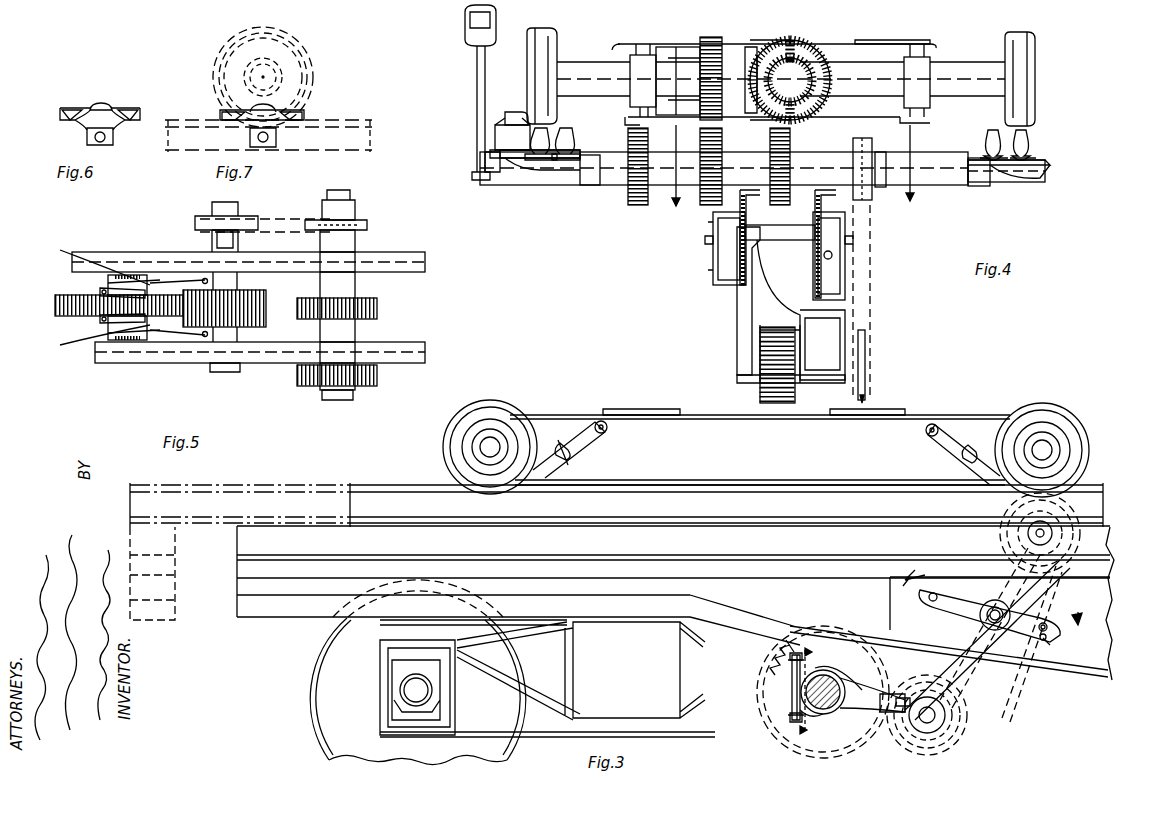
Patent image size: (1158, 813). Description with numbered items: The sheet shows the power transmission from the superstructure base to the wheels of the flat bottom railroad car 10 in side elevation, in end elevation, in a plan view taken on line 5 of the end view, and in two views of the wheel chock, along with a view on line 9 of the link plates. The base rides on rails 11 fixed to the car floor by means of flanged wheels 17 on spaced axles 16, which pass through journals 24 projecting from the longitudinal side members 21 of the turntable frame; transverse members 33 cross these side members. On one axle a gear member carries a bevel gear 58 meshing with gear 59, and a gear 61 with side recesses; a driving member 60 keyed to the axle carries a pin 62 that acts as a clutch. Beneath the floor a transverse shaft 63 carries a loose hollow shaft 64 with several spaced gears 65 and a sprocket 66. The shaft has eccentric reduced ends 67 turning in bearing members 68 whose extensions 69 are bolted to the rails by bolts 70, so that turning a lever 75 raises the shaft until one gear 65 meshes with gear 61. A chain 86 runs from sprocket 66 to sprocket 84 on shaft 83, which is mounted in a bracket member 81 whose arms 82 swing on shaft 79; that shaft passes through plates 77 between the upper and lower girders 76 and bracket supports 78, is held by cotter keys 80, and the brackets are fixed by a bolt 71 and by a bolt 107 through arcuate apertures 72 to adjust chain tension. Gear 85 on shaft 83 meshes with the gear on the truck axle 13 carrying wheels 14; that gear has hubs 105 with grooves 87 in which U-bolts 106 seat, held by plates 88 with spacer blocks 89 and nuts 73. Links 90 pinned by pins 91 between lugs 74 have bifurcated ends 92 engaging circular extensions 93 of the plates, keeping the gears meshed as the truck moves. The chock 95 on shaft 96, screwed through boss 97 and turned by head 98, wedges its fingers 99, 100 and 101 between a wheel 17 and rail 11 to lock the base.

In FIG. 4, the section line 5 is at (794, 175).
In FIG. 3, the section line 9 is at (813, 694).
In FIG. 3, the flat bottom railroad car 10 is at (673, 571).
In FIG. 7, the rails 11 is at (268, 136).
In FIG. 3, the rails 11 is at (616, 551).
In FIG. 5, the axles 13 is at (118, 275).
In FIG. 3, the axles 13 is at (400, 692).
In FIG. 3, the wheels 14 is at (335, 660).
In FIG. 4, the axles 16 is at (962, 72).
In FIG. 3, the axles 16 is at (480, 446).
In FIG. 4, the flanged wheels 17 is at (548, 42).
In FIG. 3, the flanged wheels 17 is at (450, 425).
In FIG. 4, the longitudinal side members 21 is at (948, 32).
In FIG. 3, the longitudinal side members 21 is at (760, 450).
In FIG. 4, the journals 24 is at (645, 58).
In FIG. 4, the parallel members 33 is at (885, 40).
In FIG. 3, the parallel members 33 is at (648, 410).
In FIG. 4, the bevel gear 58 is at (765, 45).
In FIG. 4, the gear 59 is at (808, 48).
In FIG. 4, the driving member 60 is at (690, 50).
In FIG. 4, the gear 61 is at (718, 44).
In FIG. 4, the pin 62 is at (675, 48).
In FIG. 5, the shaft 63 is at (350, 192).
In FIG. 4, the shaft 63 is at (960, 180).
In FIG. 3, the shaft 63 is at (1052, 537).
In FIG. 5, the hollow shaft 64 is at (355, 285).
In FIG. 4, the hollow shaft 64 is at (724, 168).
In FIG. 5, the gears 65 is at (378, 312).
In FIG. 4, the gears 65 is at (636, 206).
In FIG. 5, the sprocket 66 is at (360, 220).
In FIG. 4, the sprocket 66 is at (872, 175).
In FIG. 3, the sprocket 66 is at (1060, 520).
In FIG. 4, the reduced end portions 67 is at (1000, 170).
In FIG. 3, the reduced end portions 67 is at (1062, 528).
In FIG. 4, the bearing members 68 is at (980, 186).
In FIG. 4, the extensions 69 is at (1040, 175).
In FIG. 4, the bolts 70 is at (985, 157).
In FIG. 3, the bolt 71 is at (935, 596).
In FIG. 3, the arcuately arranged apertures 72 is at (1045, 640).
In FIG. 3, the nuts 73 is at (792, 660).
In FIG. 5, the lugs 74 is at (210, 345).
In FIG. 3, the lugs 74 is at (907, 730).
In FIG. 4, the lever 75 is at (477, 66).
In FIG. 5, the girders 76 is at (398, 258).
In FIG. 4, the girders 76 is at (705, 298).
In FIG. 3, the girders 76 is at (1110, 578).
In FIG. 4, the plates 77 is at (850, 208).
In FIG. 3, the plates 77 is at (1108, 600).
In FIG. 3, the bracket support 78 is at (1108, 630).
In FIG. 4, the shaft 79 is at (780, 246).
In FIG. 3, the shaft 79 is at (1002, 625).
In FIG. 4, the cotter keys 80 is at (706, 240).
In FIG. 4, the bracket member 81 is at (738, 325).
In FIG. 3, the bracket member 81 is at (960, 680).
In FIG. 4, the arms 82 is at (816, 329).
In FIG. 5, the shaft 83 is at (222, 290).
In FIG. 3, the shaft 83 is at (940, 725).
In FIG. 5, the sprocket 84 is at (205, 228).
In FIG. 4, the sprocket 84 is at (866, 366).
In FIG. 5, the gear 85 is at (266, 296).
In FIG. 4, the gear 85 is at (760, 383).
In FIG. 5, the chain 86 is at (282, 222).
In FIG. 4, the chain 86 is at (872, 280).
In FIG. 3, the chain 86 is at (980, 672).
In FIG. 5, the circular grooves 87 is at (104, 293).
In FIG. 3, the circular grooves 87 is at (858, 708).
In FIG. 3, the plates 88 is at (790, 710).
In FIG. 3, the spacer blocks 89 is at (790, 690).
In FIG. 5, the links 90 is at (157, 290).
In FIG. 3, the links 90 is at (880, 712).
In FIG. 5, the pins 91 is at (203, 280).
In FIG. 3, the bifurcated ends 92 is at (857, 630).
In FIG. 3, the circular extensions 93 is at (805, 630).
In FIG. 6, the chock 95 is at (116, 107).
In FIG. 4, the chock 95 is at (495, 132).
In FIG. 4, the shaft 96 is at (552, 136).
In FIG. 4, the internally threaded boss 97 is at (578, 138).
In FIG. 4, the head 98 is at (492, 150).
In FIG. 6, the upper finger 99 is at (96, 105).
In FIG. 7, the upper finger 99 is at (276, 108).
In FIG. 4, the upper finger 99 is at (512, 112).
In FIG. 6, the side fingers 100 is at (140, 110).
In FIG. 7, the side fingers 100 is at (220, 112).
In FIG. 4, the side fingers 100 is at (505, 118).
In FIG. 6, the lower finger 101 is at (112, 136).
In FIG. 7, the lower finger 101 is at (278, 137).
In FIG. 4, the lower finger 101 is at (486, 165).
In FIG. 5, the hubs 105 is at (100, 292).
In FIG. 5, the U-bolts 106 is at (143, 275).
In FIG. 3, the U-bolts 106 is at (852, 678).
In FIG. 4, the bolt 107 is at (832, 256).
In FIG. 3, the bolt 107 is at (1048, 632).